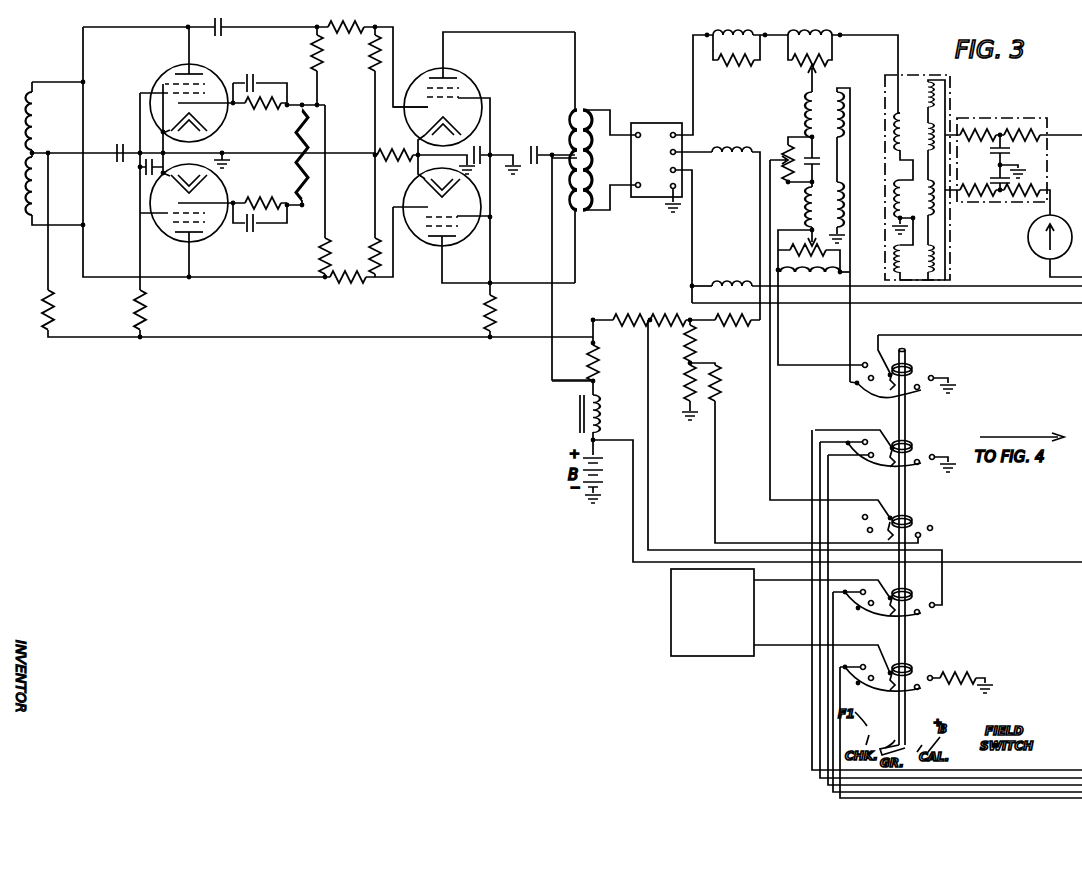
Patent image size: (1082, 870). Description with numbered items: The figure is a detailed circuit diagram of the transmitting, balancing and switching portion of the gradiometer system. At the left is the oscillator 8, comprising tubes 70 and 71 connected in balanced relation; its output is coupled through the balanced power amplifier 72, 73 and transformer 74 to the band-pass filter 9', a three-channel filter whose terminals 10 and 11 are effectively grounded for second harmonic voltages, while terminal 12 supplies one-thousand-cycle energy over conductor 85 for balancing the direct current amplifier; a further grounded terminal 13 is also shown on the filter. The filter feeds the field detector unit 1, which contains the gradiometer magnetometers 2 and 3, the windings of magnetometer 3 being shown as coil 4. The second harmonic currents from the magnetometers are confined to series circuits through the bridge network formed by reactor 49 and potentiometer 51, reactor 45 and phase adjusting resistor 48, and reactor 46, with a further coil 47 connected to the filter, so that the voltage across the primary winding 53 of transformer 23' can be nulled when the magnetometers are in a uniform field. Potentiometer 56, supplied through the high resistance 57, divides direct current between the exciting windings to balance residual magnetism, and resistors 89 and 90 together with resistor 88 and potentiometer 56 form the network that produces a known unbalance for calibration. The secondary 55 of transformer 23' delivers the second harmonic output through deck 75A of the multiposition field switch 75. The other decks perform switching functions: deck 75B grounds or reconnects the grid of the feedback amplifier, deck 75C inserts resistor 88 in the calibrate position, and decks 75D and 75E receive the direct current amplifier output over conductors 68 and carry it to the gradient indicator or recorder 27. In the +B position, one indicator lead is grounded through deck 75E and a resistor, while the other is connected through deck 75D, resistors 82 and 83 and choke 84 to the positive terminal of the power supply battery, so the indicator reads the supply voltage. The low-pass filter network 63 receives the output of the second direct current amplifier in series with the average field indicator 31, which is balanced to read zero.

The field detector unit 1 is at (945, 78).
The gradiometer magnetometer 2 is at (895, 116).
The gradiometer magnetometer 3 is at (912, 288).
The secondary winding 4 is at (885, 190).
The oscillator 8 is at (310, 199).
The band-pass filter 9' is at (656, 139).
The terminal 10 is at (675, 130).
The terminal 11 is at (671, 152).
The terminal 12 is at (671, 170).
The grounded switch terminal 13 is at (668, 194).
The transformer 23' is at (812, 227).
The gradient indicator or recorder 27 is at (705, 657).
The average field indicator 31 is at (1035, 250).
The reactor 45 is at (710, 31).
The reactor 46 is at (725, 147).
The coil 47 is at (725, 280).
The phase adjusting resistor 48 is at (736, 63).
The reactor 49 is at (826, 32).
The potentiometer 51 is at (833, 63).
The primary winding 53 is at (800, 105).
The secondary 55 is at (845, 177).
The potentiometer 56 is at (783, 148).
The high resistance 57 is at (735, 326).
The low-pass filter network 63 is at (1012, 118).
The conductors 68 is at (832, 797).
The tube 70 is at (160, 82).
The tube 71 is at (206, 236).
The balanced power amplifier 72 is at (475, 92).
The balanced power amplifier 73 is at (455, 244).
The transformer 74 is at (590, 105).
The multiposition field switch 75 is at (905, 640).
The switch deck 75A is at (912, 370).
The switch deck 75B is at (912, 447).
The switch deck 75C is at (912, 520).
The switch deck 75D is at (913, 595).
The switch deck 75E is at (912, 672).
The resistor 82 is at (625, 316).
The resistor 83 is at (598, 363).
The choke 84 is at (578, 411).
The conductor 85 is at (985, 305).
The resistor 88 is at (722, 390).
The resistor 89 is at (685, 348).
The resistor 90 is at (685, 388).